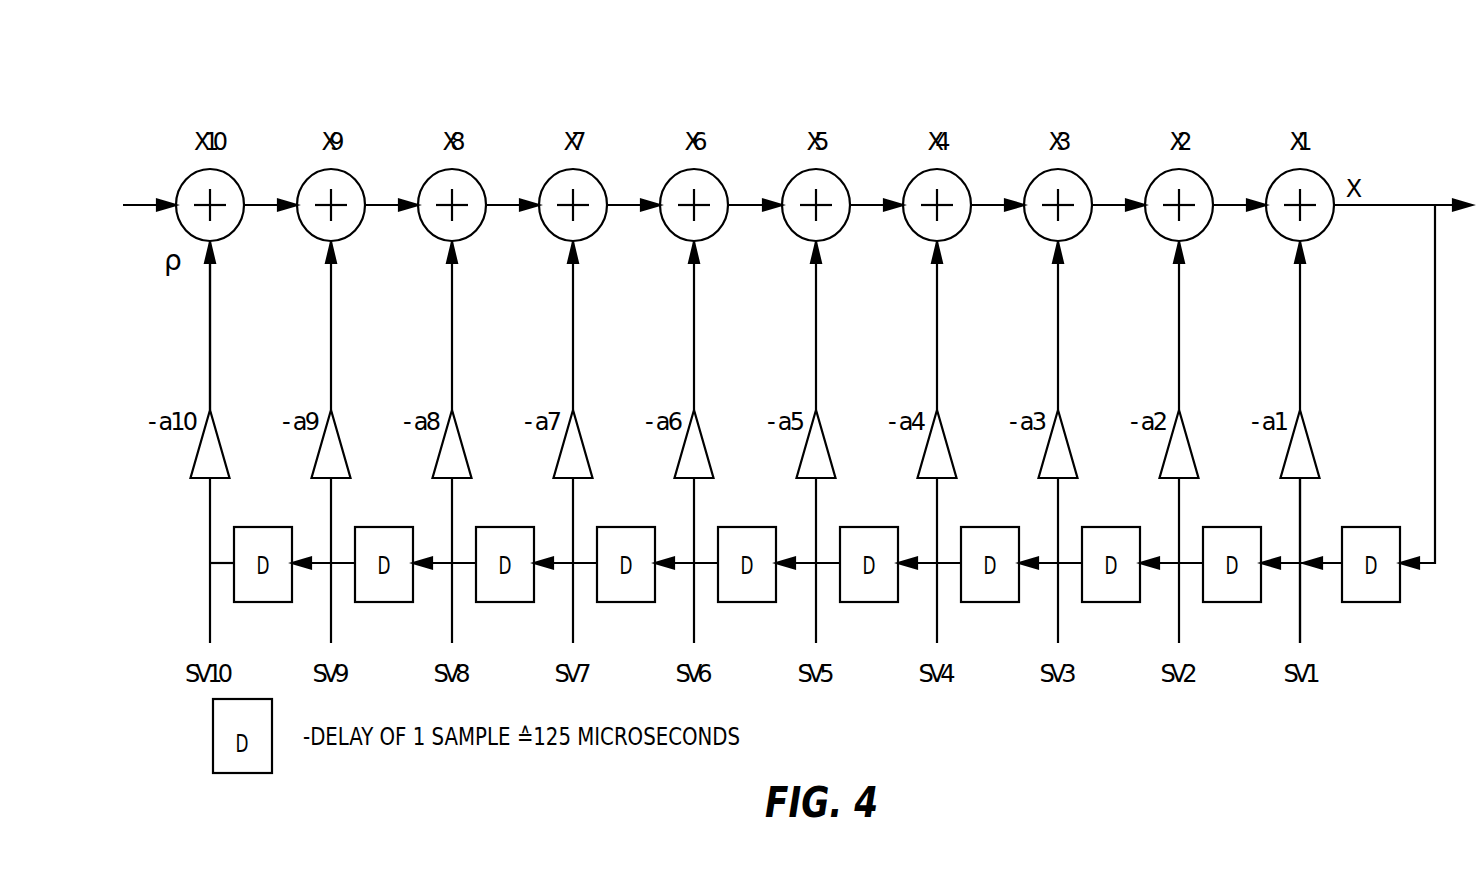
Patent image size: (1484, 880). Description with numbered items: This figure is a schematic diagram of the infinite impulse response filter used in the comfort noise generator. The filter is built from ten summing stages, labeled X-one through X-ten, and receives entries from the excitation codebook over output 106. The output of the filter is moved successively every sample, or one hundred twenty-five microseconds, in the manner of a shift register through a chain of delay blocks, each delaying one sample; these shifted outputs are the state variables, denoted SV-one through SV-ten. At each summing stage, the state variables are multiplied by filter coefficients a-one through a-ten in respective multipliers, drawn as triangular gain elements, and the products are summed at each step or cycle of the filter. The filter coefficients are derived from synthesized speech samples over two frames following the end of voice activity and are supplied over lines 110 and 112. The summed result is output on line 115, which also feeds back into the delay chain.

The output of codebook 106 is at (141, 202).
The line for filter coefficients 110 is at (211, 386).
The filter output line 115 is at (1393, 203).
The line for filter coefficients 112 is at (1303, 618).